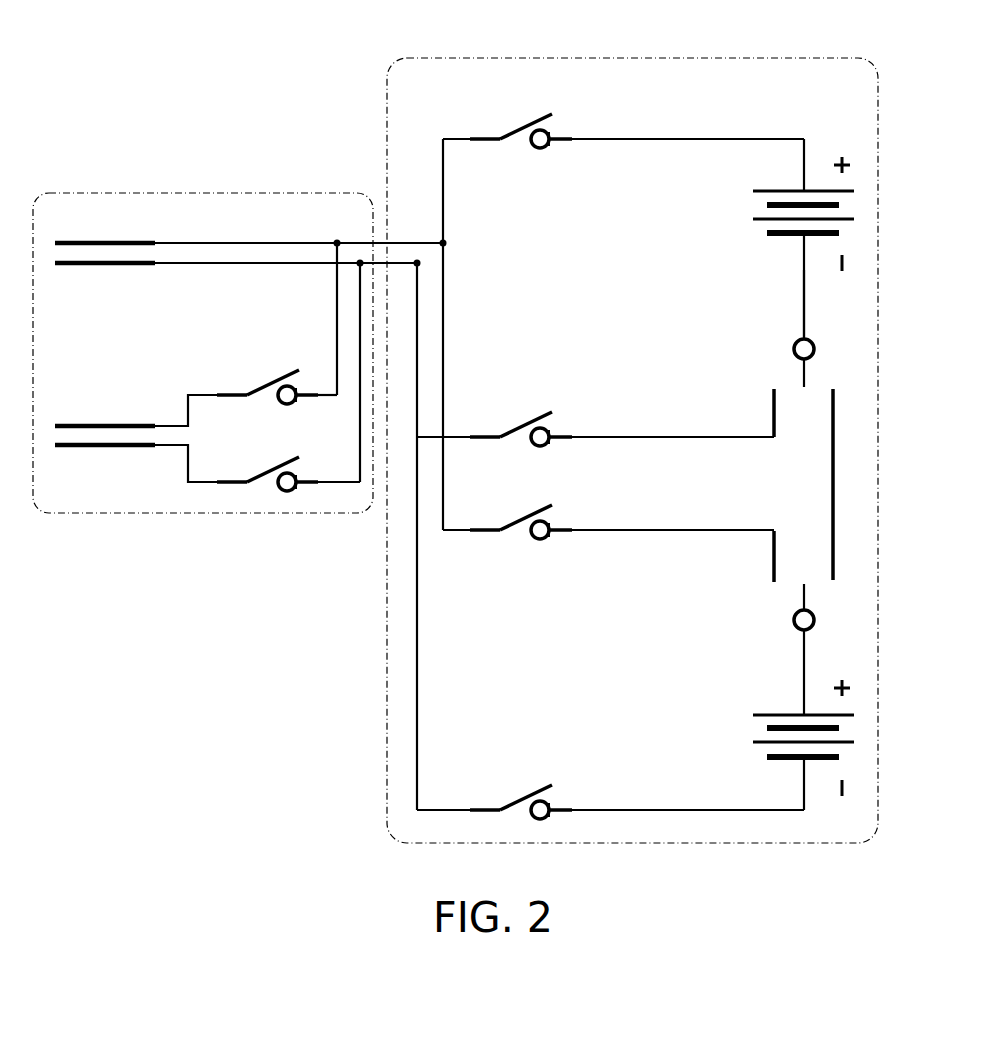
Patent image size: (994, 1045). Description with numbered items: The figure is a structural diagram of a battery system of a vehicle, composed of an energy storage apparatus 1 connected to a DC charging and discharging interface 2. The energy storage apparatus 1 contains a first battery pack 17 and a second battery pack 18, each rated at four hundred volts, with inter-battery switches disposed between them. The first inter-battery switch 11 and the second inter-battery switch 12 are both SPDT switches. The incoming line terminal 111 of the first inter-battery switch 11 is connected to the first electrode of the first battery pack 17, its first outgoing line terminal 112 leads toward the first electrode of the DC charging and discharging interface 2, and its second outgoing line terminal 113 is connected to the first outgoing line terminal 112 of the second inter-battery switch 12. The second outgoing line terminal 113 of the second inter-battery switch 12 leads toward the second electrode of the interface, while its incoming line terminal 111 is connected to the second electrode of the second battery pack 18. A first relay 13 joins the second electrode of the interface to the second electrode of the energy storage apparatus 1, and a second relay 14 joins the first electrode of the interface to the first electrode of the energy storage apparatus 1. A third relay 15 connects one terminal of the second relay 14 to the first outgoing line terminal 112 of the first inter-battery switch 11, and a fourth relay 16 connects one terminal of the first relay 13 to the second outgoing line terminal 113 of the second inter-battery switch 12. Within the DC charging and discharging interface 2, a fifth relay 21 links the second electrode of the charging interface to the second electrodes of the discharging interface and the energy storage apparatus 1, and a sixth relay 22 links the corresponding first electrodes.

The energy storage apparatus 1 is at (632, 58).
The DC charging and discharging interface 2 is at (113, 193).
The first inter-battery switch 11 is at (815, 352).
The second inter-battery switch 12 is at (815, 615).
The first relay 13 is at (548, 130).
The second relay 14 is at (548, 801).
The third relay 15 is at (548, 428).
The fourth relay 16 is at (548, 521).
The first battery pack 17 is at (753, 217).
The second battery pack 18 is at (753, 716).
The fifth relay 21 is at (283, 383).
The sixth relay 22 is at (288, 495).
The incoming line terminal 111 is at (806, 307).
The first outgoing line terminal 112 is at (774, 390).
The second outgoing line terminal 113 is at (835, 400).